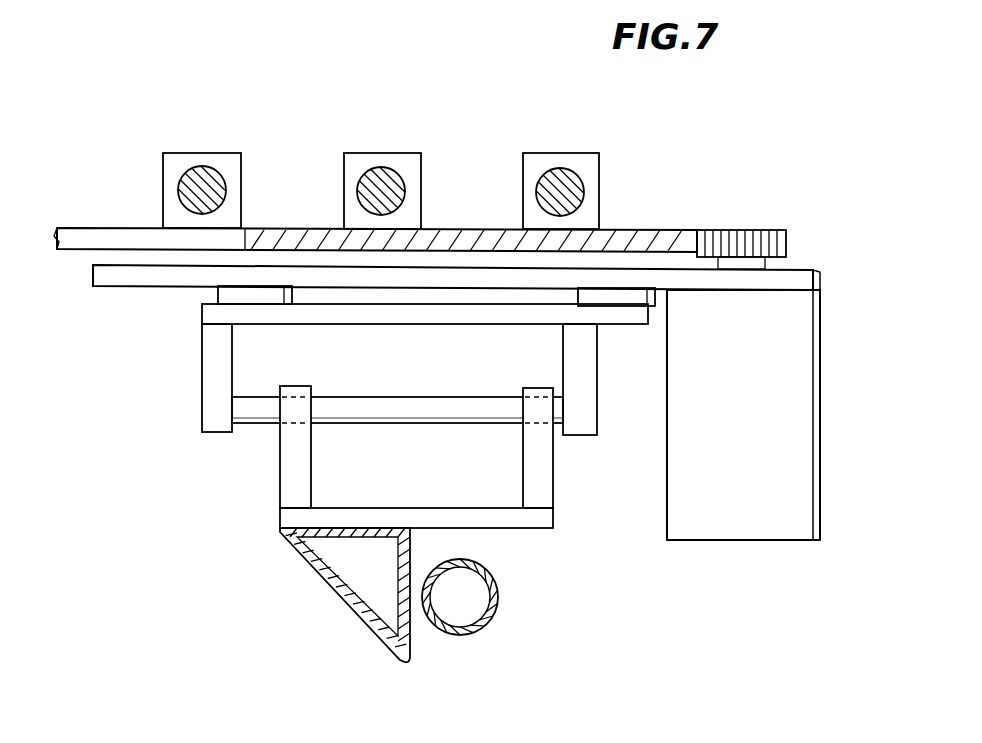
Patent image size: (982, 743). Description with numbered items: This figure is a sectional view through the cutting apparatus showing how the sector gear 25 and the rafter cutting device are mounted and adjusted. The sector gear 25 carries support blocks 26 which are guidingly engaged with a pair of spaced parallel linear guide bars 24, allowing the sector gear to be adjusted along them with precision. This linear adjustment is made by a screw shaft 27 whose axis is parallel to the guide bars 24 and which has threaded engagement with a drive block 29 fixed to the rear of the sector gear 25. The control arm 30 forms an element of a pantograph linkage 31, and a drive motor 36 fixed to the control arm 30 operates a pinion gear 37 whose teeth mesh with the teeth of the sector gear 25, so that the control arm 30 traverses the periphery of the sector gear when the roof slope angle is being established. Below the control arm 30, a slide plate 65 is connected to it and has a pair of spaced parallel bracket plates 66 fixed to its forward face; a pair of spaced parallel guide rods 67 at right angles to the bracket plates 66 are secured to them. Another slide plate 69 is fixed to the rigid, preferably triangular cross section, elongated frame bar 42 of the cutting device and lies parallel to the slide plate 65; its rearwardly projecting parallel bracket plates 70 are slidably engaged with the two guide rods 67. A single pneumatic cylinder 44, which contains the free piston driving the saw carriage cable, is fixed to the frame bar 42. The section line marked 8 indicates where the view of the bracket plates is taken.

The section line 8- 8 is at (175, 408).
The linear guide bar 24 is at (204, 172).
The sector gear 25 is at (673, 231).
The support block 26 is at (165, 190).
The screw shaft 27 is at (388, 183).
The drive block 29 is at (355, 162).
The control arm 30 is at (810, 284).
The pantograph linkage 31 is at (222, 295).
The drive motor 36 is at (804, 451).
The pinion gear 37 is at (786, 240).
The frame bar 42 is at (351, 611).
The pneumatic cylinder 44 is at (494, 600).
The slide plate 65 is at (365, 316).
The bracket plate 66 is at (212, 365).
The guide rod 67 is at (407, 405).
The slide plate 69 is at (540, 521).
The bracket plate 70 is at (293, 471).